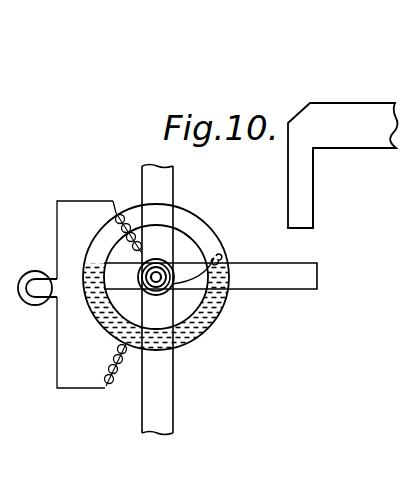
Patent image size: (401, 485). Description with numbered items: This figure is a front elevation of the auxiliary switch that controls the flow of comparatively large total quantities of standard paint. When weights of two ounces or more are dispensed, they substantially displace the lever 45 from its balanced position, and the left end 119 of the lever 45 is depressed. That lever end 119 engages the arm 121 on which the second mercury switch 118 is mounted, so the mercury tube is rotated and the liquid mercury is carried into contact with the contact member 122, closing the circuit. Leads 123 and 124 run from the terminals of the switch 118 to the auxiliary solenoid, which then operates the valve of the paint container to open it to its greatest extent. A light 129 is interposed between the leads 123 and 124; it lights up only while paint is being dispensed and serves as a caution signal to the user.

The lever 45 is at (364, 108).
The second mercury switch 118 is at (112, 220).
The left end of the lever 119 is at (311, 205).
The arm 121 is at (276, 271).
The contact member 122 is at (221, 257).
The lead 123 is at (119, 186).
The lead 124 is at (108, 399).
The light 129 is at (23, 297).